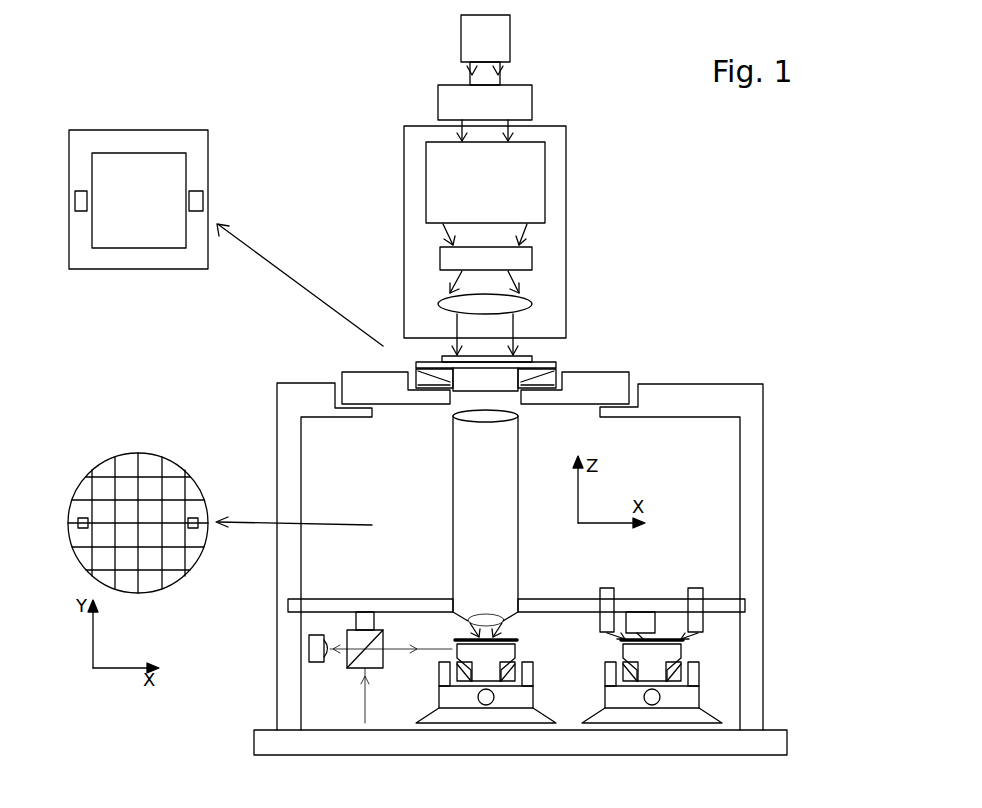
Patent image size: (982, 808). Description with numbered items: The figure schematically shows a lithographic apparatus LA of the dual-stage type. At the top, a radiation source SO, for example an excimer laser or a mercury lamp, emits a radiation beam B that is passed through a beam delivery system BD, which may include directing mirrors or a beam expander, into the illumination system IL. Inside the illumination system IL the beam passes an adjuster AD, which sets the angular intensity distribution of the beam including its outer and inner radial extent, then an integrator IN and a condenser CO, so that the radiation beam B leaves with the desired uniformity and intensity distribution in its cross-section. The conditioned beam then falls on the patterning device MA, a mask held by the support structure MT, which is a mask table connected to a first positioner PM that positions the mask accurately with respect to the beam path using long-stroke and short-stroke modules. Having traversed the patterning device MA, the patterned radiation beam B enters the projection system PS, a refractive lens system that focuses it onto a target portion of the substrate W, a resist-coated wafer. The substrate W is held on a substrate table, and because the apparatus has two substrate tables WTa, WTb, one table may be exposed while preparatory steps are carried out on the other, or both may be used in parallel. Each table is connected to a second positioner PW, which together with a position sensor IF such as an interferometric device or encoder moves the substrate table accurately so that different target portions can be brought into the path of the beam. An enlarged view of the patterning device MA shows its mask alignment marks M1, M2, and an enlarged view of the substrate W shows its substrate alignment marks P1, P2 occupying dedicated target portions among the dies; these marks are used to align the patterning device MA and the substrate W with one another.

The lithographic apparatus LA is at (670, 207).
The radiation source SO is at (510, 45).
The beam delivery system BD is at (532, 108).
The illumination system IL is at (567, 163).
The adjuster AD is at (545, 205).
The integrator IN is at (532, 258).
The condenser CO is at (532, 304).
The radiation beam B is at (487, 351).
The patterning device MA is at (432, 361).
The mask alignment mark M1 is at (196, 190).
The mask alignment mark M2 is at (78, 190).
The support structure MT is at (636, 372).
The first positioner PM is at (340, 372).
The projection system PS is at (518, 502).
The substrate W is at (458, 637).
The substrate alignment mark P1 is at (82, 518).
The substrate alignment mark P2 is at (193, 518).
The position sensor IF is at (337, 676).
The substrate table WTa is at (517, 650).
The substrate table WTb is at (683, 650).
The second positioner PW is at (440, 709).